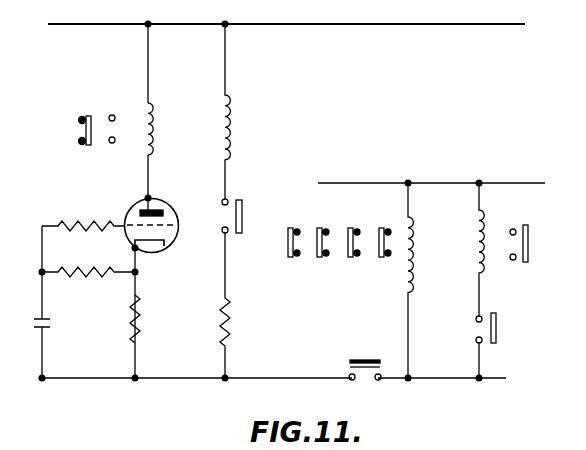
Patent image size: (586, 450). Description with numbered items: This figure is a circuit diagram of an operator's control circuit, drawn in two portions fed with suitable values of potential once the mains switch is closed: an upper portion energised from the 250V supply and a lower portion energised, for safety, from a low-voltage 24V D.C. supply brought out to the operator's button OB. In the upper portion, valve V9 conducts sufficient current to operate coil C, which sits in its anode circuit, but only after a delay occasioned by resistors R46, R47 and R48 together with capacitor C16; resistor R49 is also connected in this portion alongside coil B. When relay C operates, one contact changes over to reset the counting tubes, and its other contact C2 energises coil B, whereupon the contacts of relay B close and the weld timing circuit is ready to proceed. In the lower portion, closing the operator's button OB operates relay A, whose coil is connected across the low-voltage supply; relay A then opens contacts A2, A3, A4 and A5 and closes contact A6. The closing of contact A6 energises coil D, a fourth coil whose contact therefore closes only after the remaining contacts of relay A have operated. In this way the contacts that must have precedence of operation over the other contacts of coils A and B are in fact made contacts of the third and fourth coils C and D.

The 250 volt supply 250V is at (281, 14).
The 24 volt supply 24V is at (414, 184).
The coil C is at (159, 129).
The coil B is at (236, 111).
The valve V9 is at (156, 201).
The resistor R46 is at (83, 216).
The resistor R47 is at (88, 262).
The capacitor C16 is at (63, 302).
The resistor R48 is at (154, 319).
The resistor R49 is at (244, 305).
The contact C2 is at (246, 216).
The contact A5 is at (291, 231).
The contact A4 is at (319, 231).
The contact A3 is at (348, 231).
The contact A2 is at (382, 231).
The relay A is at (419, 280).
The coil D is at (490, 249).
The contact A6 is at (500, 345).
The operator's button OB is at (365, 361).